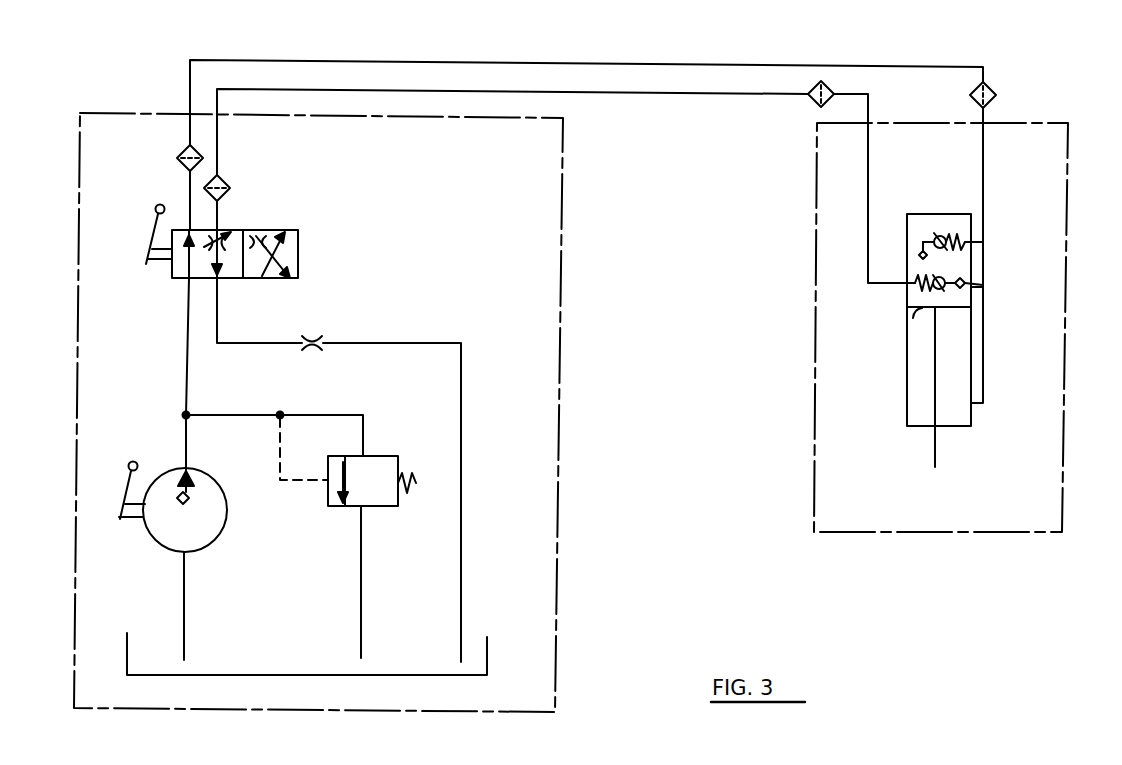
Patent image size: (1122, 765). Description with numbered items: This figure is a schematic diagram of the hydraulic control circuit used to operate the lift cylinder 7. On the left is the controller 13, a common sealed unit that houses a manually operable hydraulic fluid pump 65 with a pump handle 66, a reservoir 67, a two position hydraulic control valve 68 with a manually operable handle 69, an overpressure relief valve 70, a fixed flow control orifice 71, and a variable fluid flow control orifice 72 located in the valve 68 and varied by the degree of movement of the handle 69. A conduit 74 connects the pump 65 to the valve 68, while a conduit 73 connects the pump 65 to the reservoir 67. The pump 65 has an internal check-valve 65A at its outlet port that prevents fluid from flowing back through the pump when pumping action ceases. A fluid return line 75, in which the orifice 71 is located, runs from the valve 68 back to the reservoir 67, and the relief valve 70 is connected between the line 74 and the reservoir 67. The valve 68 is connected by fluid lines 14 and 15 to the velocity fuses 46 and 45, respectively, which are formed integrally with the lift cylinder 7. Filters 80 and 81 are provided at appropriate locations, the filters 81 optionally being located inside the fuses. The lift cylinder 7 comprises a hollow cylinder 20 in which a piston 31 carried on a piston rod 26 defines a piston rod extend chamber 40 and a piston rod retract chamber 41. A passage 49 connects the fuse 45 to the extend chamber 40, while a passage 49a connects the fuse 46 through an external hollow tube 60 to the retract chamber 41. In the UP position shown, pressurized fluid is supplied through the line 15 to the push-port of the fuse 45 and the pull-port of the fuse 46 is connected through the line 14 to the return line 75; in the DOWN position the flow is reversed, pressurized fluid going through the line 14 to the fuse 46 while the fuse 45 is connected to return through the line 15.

The controller 13 is at (78, 309).
The lift cylinder 7 is at (1068, 298).
The fluid line 15 is at (690, 65).
The fluid line 14 is at (676, 94).
The filter 80 is at (180, 150).
The two position hydraulic control valve 68 is at (296, 230).
The variable fluid flow control orifice 72 is at (229, 238).
The valve handle 69 is at (156, 232).
The conduit 74 is at (186, 370).
The fluid return line 75 is at (397, 343).
The fixed flow control orifice 71 is at (315, 336).
The overpressure relief valve 70 is at (385, 456).
The hydraulic fluid pump 65 is at (217, 537).
The internal check-valve 65A is at (190, 498).
The pump handle 66 is at (128, 480).
The conduit 73 is at (182, 573).
The reservoir 67 is at (127, 645).
The piston rod extend chamber 40 is at (924, 215).
The passage 49 is at (922, 241).
The velocity fuse 45 is at (984, 247).
The passage 49a is at (950, 279).
The filter 81 is at (918, 255).
The velocity fuse 46 is at (898, 290).
The hollow cylinder 20 is at (907, 372).
The piston 31 is at (918, 310).
The piston rod 26 is at (935, 450).
The piston rod retract chamber 41 is at (952, 420).
The hollow tube 60 is at (984, 352).